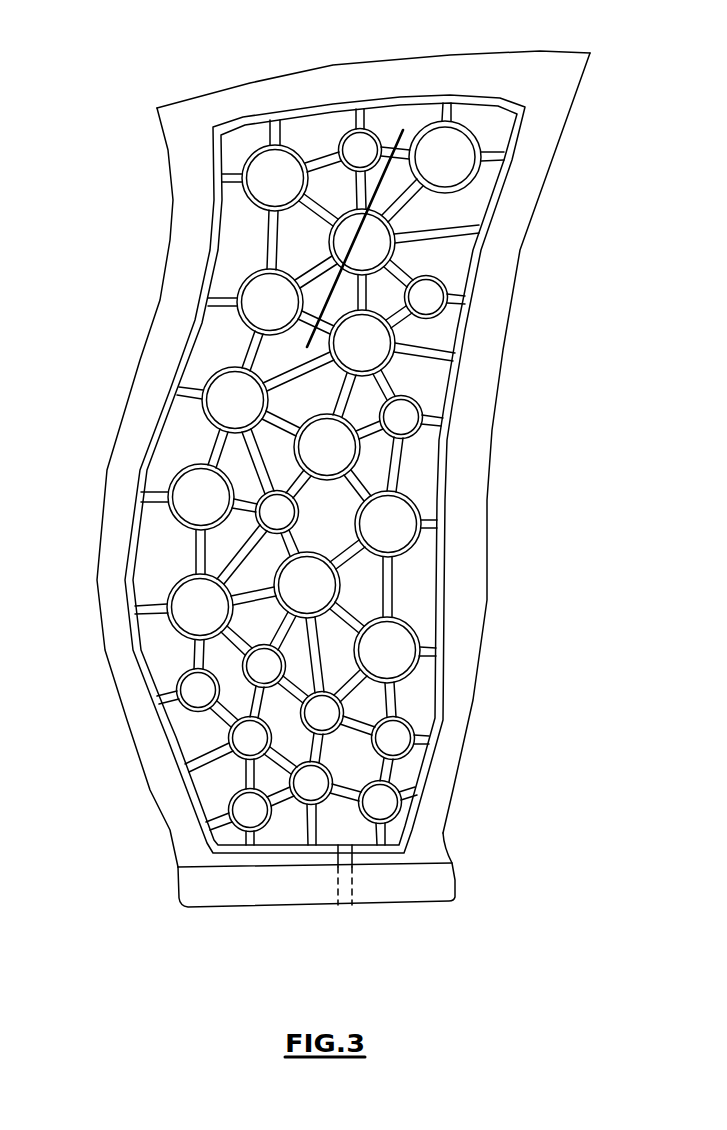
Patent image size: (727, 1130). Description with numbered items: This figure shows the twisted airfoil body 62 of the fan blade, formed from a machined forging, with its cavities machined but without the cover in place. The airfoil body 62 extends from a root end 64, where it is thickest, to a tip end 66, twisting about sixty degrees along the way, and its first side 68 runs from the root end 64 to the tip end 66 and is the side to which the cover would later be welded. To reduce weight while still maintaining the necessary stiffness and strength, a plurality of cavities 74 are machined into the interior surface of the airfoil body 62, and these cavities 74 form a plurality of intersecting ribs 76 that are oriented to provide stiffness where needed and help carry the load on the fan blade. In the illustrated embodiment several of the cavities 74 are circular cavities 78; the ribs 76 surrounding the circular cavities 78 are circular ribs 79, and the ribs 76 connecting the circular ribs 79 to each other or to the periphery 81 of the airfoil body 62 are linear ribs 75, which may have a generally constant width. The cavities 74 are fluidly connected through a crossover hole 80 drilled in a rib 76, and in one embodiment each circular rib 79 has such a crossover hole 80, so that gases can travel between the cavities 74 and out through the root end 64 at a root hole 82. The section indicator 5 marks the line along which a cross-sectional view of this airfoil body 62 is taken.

The airfoil body 62 is at (134, 292).
The root end 64 is at (195, 888).
The tip end 66 is at (440, 68).
The first side 68 is at (108, 570).
The cavities 74 is at (463, 258).
The linear ribs 75 is at (422, 360).
The ribs 76 is at (420, 233).
The circular cavities 78 is at (432, 293).
The circular ribs 79 is at (395, 340).
The crossover hole 80 is at (413, 158).
The periphery 81 is at (450, 402).
The root hole 82 is at (348, 885).
The section line 5- 5 is at (291, 342).